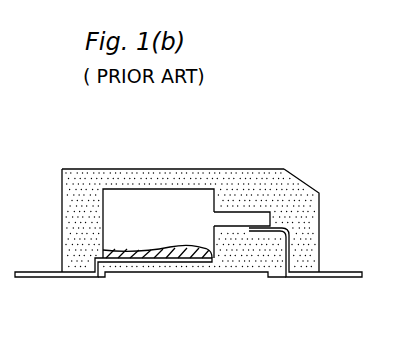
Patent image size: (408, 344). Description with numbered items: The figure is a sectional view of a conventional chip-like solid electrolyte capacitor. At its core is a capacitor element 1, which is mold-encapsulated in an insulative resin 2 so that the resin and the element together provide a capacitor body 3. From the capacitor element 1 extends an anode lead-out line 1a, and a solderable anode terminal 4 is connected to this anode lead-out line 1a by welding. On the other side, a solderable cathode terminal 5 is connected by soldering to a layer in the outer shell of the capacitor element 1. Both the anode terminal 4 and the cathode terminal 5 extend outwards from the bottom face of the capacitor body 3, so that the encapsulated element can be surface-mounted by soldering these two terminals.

The capacitor element 1 is at (180, 196).
The anode lead-out line 1a is at (233, 216).
The insulative resin 2 is at (287, 188).
The capacitor body 3 is at (152, 163).
The anode terminal 4 is at (316, 277).
The cathode terminal 5 is at (57, 278).